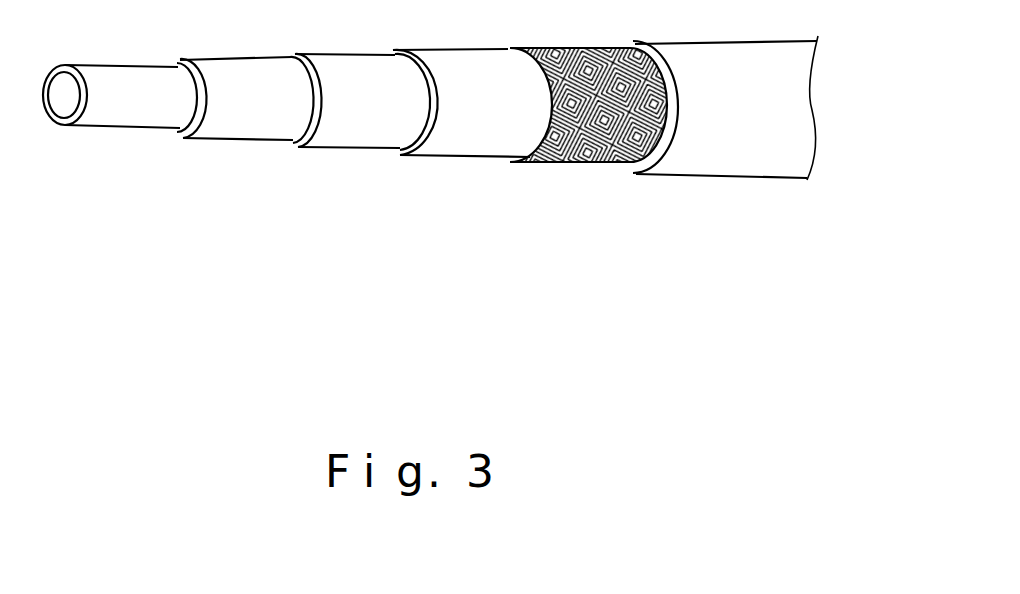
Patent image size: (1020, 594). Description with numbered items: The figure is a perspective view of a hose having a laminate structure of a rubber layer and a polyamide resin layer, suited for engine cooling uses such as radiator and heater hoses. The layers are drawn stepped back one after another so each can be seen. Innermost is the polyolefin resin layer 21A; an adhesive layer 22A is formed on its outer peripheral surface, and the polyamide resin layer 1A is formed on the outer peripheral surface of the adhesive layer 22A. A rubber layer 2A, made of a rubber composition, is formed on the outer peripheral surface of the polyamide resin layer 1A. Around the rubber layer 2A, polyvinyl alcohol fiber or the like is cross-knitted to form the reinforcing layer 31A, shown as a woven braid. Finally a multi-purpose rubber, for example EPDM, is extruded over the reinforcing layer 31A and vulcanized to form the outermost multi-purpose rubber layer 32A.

The polyolefin resin layer 21A is at (120, 117).
The adhesive layer 22A is at (242, 122).
The polyamide resin layer 1A is at (353, 133).
The rubber layer 2A is at (460, 137).
The reinforcing layer 31A is at (575, 152).
The multi-purpose rubber layer 32A is at (721, 158).